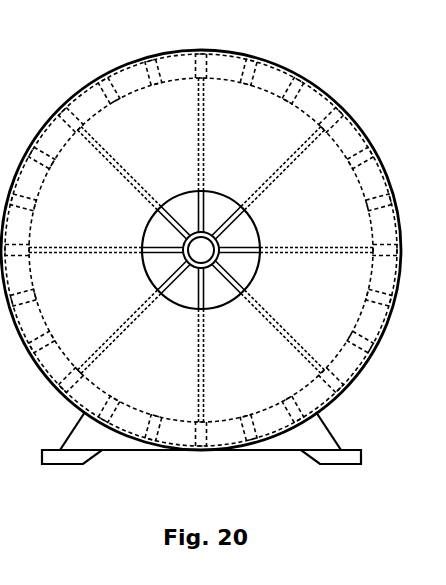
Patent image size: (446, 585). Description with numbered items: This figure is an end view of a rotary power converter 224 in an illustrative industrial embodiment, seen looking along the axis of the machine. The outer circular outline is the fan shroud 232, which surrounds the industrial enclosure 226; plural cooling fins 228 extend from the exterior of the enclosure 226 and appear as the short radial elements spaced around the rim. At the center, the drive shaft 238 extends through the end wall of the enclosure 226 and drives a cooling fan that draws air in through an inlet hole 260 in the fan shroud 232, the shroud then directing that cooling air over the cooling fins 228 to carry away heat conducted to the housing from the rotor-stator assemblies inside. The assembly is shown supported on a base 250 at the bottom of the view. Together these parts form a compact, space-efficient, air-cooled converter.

The rotary power converter 224 is at (87, 511).
The industrial enclosure 226 is at (308, 110).
The cooling fins 228 is at (142, 70).
The fan shroud 232 is at (217, 50).
The drive shaft 238 is at (226, 243).
The stand 250 is at (338, 446).
The inlet hole 260 is at (218, 307).